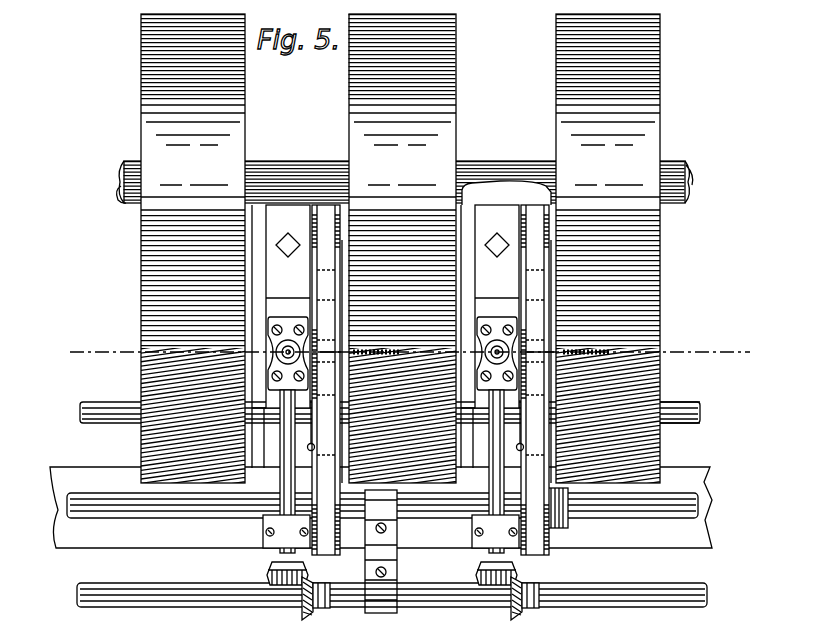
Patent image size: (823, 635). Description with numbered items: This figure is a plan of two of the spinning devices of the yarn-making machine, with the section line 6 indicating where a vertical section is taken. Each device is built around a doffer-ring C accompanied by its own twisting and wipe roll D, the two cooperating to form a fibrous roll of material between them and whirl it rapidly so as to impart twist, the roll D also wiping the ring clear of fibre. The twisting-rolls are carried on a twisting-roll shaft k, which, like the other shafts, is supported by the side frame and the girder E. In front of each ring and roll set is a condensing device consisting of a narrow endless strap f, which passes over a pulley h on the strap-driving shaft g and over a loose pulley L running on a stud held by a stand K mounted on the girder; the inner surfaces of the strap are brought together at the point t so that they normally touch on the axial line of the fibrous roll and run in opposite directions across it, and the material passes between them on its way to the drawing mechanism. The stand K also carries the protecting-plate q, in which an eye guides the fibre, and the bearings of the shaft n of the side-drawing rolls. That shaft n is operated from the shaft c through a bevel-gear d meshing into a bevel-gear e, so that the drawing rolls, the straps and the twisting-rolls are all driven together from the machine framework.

The doffer-rings C is at (405, 261).
The twisting and wipe rolls D is at (141, 377).
The girder E is at (381, 507).
The stand K is at (392, 306).
The loose pulley L is at (316, 220).
The protecting-plate q is at (345, 300).
The point where strap surfaces touch t is at (436, 341).
The shaft of the side-drawing rolls n is at (285, 447).
The condensing strap f is at (313, 449).
The pulley h is at (331, 540).
The strap-driving shaft g is at (656, 508).
The bevel-gear e is at (268, 572).
The bevel-gear d is at (311, 617).
The shaft c is at (638, 586).
The twisting-roll shaft k is at (696, 406).
The section line 6 6 is at (401, 353).